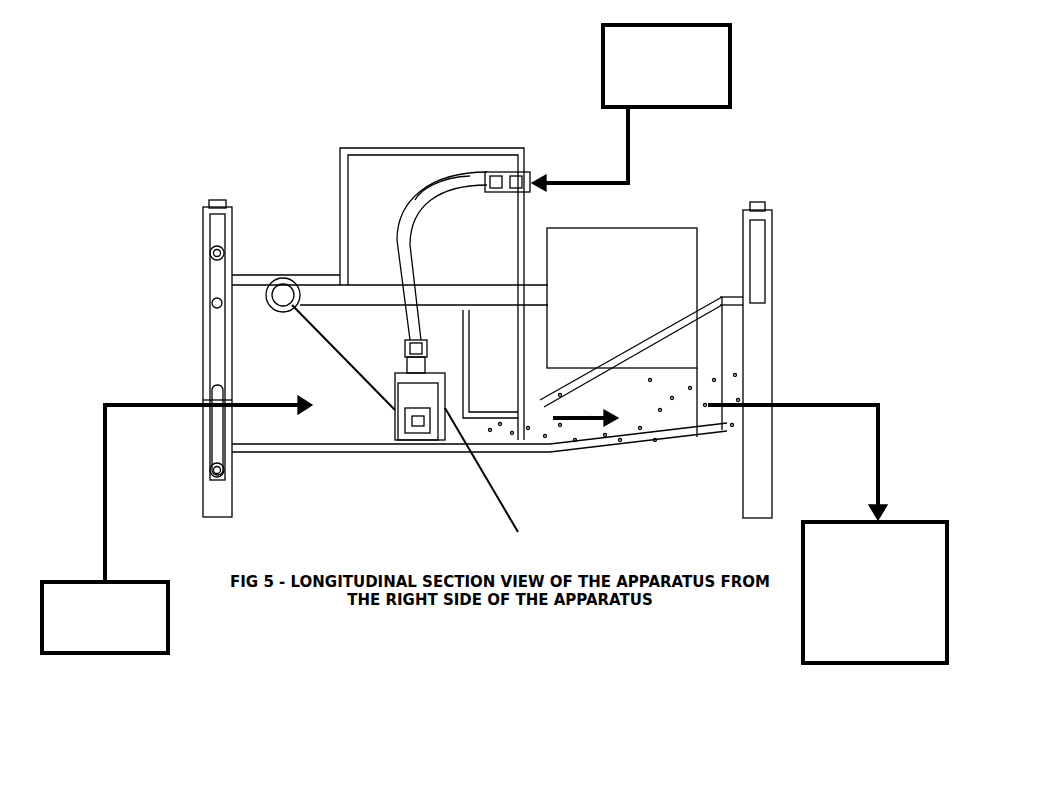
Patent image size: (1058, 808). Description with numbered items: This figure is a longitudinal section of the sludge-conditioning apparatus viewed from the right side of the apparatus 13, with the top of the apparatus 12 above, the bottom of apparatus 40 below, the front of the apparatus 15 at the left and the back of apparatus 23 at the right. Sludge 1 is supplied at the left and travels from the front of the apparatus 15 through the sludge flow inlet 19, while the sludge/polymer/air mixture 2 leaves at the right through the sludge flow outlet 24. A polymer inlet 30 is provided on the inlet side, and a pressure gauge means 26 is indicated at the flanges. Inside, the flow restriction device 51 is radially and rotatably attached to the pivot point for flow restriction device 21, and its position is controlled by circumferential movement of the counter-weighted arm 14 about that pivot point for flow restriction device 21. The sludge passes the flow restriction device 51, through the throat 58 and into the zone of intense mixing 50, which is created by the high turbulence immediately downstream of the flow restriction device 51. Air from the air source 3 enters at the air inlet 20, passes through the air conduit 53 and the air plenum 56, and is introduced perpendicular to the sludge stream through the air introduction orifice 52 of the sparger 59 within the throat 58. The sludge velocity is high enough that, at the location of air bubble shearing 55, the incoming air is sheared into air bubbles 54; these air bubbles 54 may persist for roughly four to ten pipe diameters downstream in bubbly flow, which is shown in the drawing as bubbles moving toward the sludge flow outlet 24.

The sludge 1 is at (80, 581).
The sludge/polymer/air mixture 2 is at (828, 665).
The air source 3 is at (656, 108).
The top of the apparatus 12 is at (493, 150).
The right side of the apparatus 13 is at (240, 327).
The counter-weighted arm 14 is at (658, 230).
The front of the apparatus 15 is at (207, 420).
The sludge flow inlet 19 is at (203, 363).
The air inlet 20 is at (563, 143).
The pivot point for flow restriction device 21 is at (282, 278).
The back of apparatus 23 is at (772, 288).
The sludge flow outlet 24 is at (772, 373).
The pressure gauge means 26 is at (218, 204).
The polymer inlet 30 is at (212, 252).
The bottom of apparatus 40 is at (273, 457).
The zone of intense mixing 50 is at (423, 440).
The flow restriction device 51 is at (348, 365).
The air introduction orifice 52 is at (393, 440).
The air conduit 53 is at (443, 186).
The air bubble 54 is at (697, 413).
The location of air bubble shearing 55 is at (410, 443).
The air plenum 56 is at (340, 165).
The throat 58 is at (414, 443).
The sparger 59 is at (490, 487).